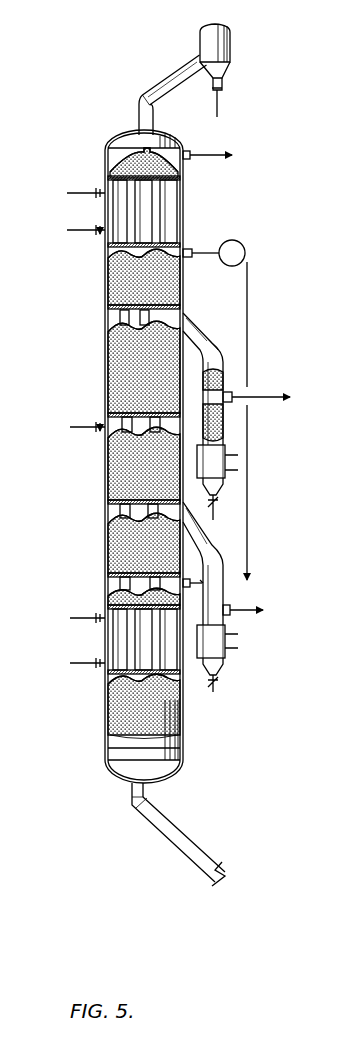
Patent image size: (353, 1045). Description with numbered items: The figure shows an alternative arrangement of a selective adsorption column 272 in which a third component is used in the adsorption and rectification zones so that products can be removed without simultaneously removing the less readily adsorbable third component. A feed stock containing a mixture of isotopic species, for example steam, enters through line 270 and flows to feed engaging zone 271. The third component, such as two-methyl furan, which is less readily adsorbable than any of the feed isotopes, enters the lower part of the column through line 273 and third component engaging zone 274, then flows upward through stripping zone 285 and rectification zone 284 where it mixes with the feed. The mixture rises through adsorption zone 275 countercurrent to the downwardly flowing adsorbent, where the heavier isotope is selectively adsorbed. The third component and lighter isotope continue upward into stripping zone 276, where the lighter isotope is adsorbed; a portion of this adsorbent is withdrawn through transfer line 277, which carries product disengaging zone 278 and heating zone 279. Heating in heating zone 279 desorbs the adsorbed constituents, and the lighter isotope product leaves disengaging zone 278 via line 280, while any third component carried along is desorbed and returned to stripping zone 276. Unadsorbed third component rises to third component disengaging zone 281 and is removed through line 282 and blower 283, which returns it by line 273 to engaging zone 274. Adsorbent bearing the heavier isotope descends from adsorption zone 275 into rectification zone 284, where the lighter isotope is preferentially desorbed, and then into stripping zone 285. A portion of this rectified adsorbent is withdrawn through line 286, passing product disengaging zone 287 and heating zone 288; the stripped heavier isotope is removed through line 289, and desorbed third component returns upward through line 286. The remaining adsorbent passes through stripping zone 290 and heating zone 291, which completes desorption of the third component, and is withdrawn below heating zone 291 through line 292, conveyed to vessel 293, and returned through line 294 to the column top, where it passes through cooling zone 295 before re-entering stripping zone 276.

The line 270 is at (70, 427).
The feed engaging zone 271 is at (105, 432).
The selective adsorption column 272 is at (113, 148).
The line 273 is at (232, 587).
The third component engaging zone 274 is at (115, 580).
The adsorption zone 275 is at (133, 360).
The stripping zone 276 is at (130, 280).
The transfer line 277 is at (188, 333).
The product disengaging zone 278 is at (218, 390).
The heating zone 279 is at (212, 485).
The line 280 is at (272, 398).
The third component disengaging zone 281 is at (115, 248).
The line 282 is at (205, 253).
The blower 283 is at (245, 255).
The rectification zone 284 is at (130, 475).
The stripping zone 285 is at (128, 545).
The line 286 is at (210, 558).
The product disengaging zone 287 is at (225, 622).
The heating zone 288 is at (222, 666).
The line 289 is at (245, 617).
The stripping zone 290 is at (115, 597).
The heating zone 291 is at (112, 635).
The line 292 is at (133, 800).
The vessel 293 is at (230, 40).
The line 294 is at (165, 86).
The cooling zone 295 is at (140, 217).